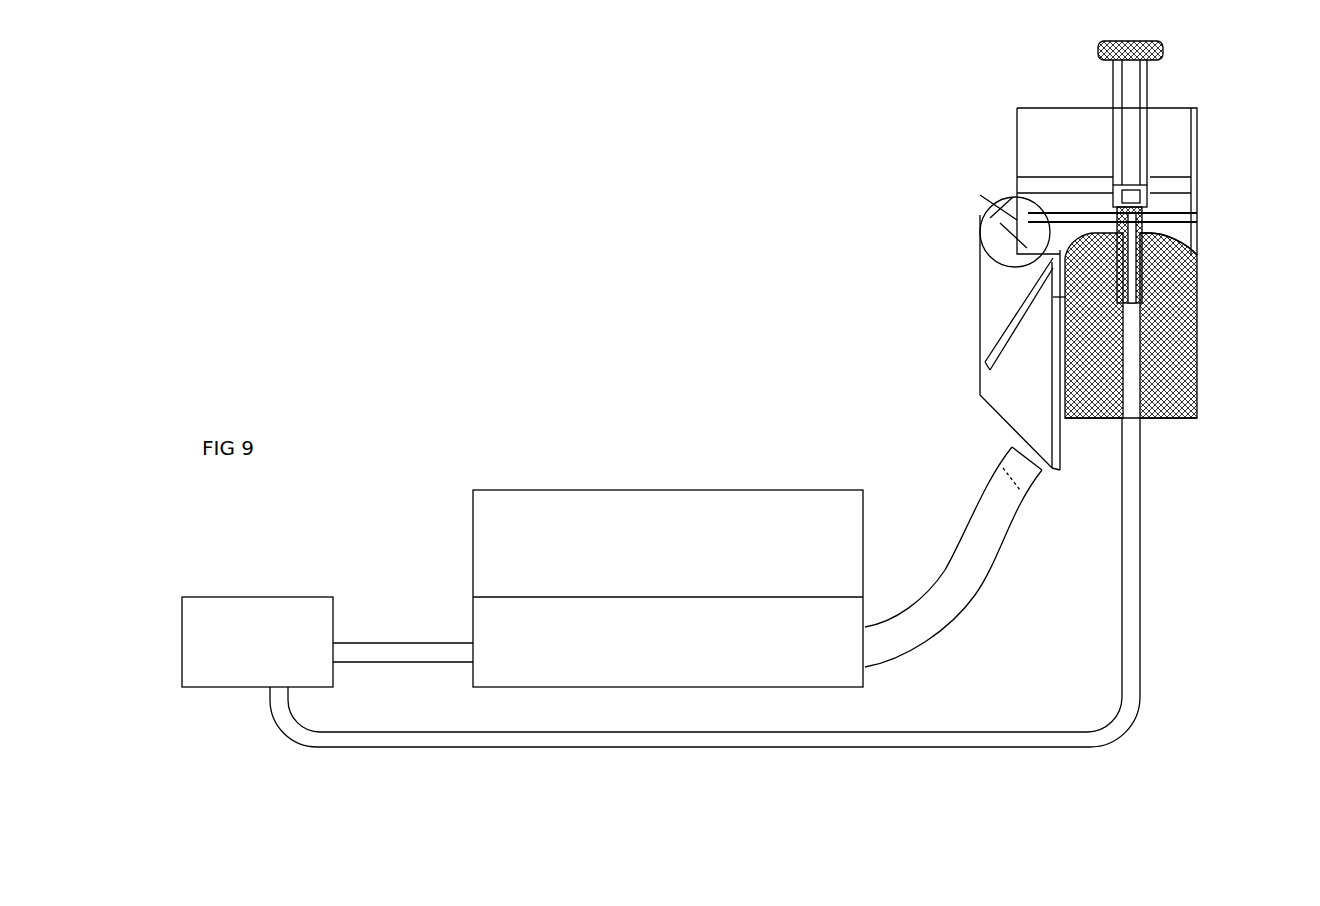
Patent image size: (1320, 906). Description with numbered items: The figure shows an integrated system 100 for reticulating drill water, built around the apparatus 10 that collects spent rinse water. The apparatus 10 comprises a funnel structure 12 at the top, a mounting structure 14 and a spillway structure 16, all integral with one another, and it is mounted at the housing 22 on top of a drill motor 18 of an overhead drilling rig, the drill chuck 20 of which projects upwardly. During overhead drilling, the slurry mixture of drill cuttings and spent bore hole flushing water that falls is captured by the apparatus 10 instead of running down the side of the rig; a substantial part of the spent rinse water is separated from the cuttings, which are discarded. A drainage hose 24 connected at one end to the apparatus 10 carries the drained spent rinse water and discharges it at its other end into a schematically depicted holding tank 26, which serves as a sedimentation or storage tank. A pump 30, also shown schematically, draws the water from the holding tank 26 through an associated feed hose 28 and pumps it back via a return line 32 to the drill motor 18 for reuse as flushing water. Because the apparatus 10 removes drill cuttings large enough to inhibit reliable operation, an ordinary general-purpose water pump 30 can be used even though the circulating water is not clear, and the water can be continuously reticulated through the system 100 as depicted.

The integrated system 100 is at (676, 402).
The apparatus 10 is at (985, 157).
The funnel structure 12 is at (1055, 127).
The mounting structure 14 is at (1200, 247).
The spillway structure 16 is at (977, 280).
The drill motor 18 is at (1185, 310).
The drill chuck 20 is at (1143, 223).
The housing 22 is at (1167, 243).
The drainage hose 24 is at (1000, 555).
The holding tank 26 is at (714, 566).
The feed hose 28 is at (393, 650).
The pump 30 is at (222, 680).
The return line 32 is at (665, 745).